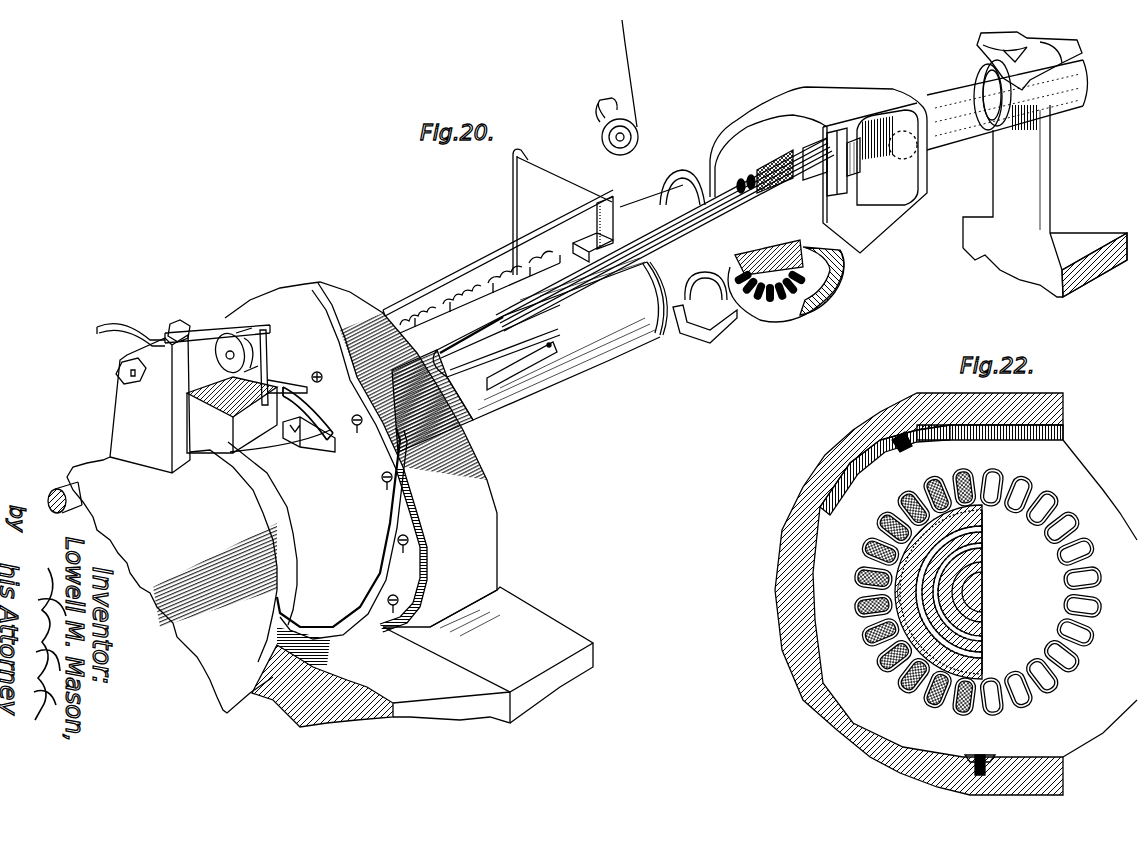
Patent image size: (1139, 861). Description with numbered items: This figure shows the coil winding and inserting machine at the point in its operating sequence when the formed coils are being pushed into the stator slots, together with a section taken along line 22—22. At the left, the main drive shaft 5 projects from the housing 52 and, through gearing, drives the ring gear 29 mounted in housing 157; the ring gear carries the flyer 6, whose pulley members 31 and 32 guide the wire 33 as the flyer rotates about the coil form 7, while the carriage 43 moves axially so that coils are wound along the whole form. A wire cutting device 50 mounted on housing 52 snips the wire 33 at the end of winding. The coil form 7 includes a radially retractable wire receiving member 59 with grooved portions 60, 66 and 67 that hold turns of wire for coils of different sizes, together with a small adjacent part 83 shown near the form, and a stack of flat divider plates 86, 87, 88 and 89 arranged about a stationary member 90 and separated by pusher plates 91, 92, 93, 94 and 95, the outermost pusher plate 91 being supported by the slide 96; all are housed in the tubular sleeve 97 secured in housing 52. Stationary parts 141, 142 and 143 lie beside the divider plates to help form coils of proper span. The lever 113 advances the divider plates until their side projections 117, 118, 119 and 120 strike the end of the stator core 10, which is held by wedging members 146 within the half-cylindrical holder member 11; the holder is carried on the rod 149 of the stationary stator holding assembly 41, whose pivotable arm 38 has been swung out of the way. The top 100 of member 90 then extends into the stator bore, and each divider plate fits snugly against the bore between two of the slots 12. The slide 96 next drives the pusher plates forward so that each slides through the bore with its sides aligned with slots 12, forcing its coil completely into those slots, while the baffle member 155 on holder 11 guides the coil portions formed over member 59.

In FIG. 20, the main drive shaft 5 is at (64, 492).
In FIG. 20, the flyer 6 is at (287, 378).
In FIG. 20, the coil form 7 is at (609, 386).
In FIG. 20, the stator core 10 is at (832, 325).
In FIG. 22, the stator core 10 is at (1090, 480).
In FIG. 20, the stator holder member 11 is at (802, 73).
In FIG. 20, the stator slots 12 is at (787, 253).
In FIG. 22, the stator slots 12 is at (1040, 677).
In FIG. 20, the section line 22— 22 is at (720, 137).
In FIG. 20, the ring gear 29 is at (328, 407).
In FIG. 20, the flyer pulley 31 is at (229, 342).
In FIG. 20, the flyer pulley 32 is at (213, 337).
In FIG. 20, the wire 33 is at (500, 240).
In FIG. 20, the arm 38 is at (596, 108).
In FIG. 20, the stator holding assembly 41 is at (1092, 148).
In FIG. 20, the carriage 43 is at (530, 615).
In FIG. 20, the wire cutting device 50 is at (205, 338).
In FIG. 20, the housing 52 is at (215, 675).
In FIG. 20, the wire receiving member 59 is at (466, 278).
In FIG. 20, the grooved portion 60 is at (538, 256).
In FIG. 20, the grooved portion 66 is at (482, 277).
In FIG. 20, the grooved portion 67 is at (420, 305).
In FIG. 20, the plate 83 is at (590, 240).
In FIG. 20, the divider plate 86 is at (740, 208).
In FIG. 22, the divider plate 86 is at (973, 622).
In FIG. 20, the divider plate 87 is at (716, 213).
In FIG. 22, the divider plate 87 is at (960, 583).
In FIG. 20, the divider plate 88 is at (700, 215).
In FIG. 22, the divider plate 88 is at (930, 560).
In FIG. 20, the divider plate 89 is at (676, 224).
In FIG. 22, the divider plate 89 is at (907, 557).
In FIG. 20, the stationary member 90 is at (660, 228).
In FIG. 20, the pusher plate 91 is at (670, 296).
In FIG. 22, the pusher plate 91 is at (980, 652).
In FIG. 20, the pusher plate 92 is at (775, 170).
In FIG. 22, the pusher plate 92 is at (968, 602).
In FIG. 20, the pusher plate 93 is at (815, 148).
In FIG. 22, the pusher plate 93 is at (940, 570).
In FIG. 20, the pusher plate 94 is at (835, 132).
In FIG. 22, the pusher plate 94 is at (980, 632).
In FIG. 22, the pusher plate 95 is at (890, 567).
In FIG. 20, the slide member 96 is at (500, 415).
In FIG. 20, the tubular sleeve 97 is at (638, 127).
In FIG. 20, the top portion of stationary member 100 is at (855, 165).
In FIG. 22, the top portion of stationary member 100 is at (900, 593).
In FIG. 20, the lever 113 is at (517, 370).
In FIG. 22, the projection 117 is at (963, 680).
In FIG. 22, the projection 118 is at (943, 683).
In FIG. 22, the projection 119 is at (917, 663).
In FIG. 22, the projection 120 is at (907, 637).
In FIG. 20, the stationary part 141 is at (320, 435).
In FIG. 20, the stationary part 142 is at (455, 372).
In FIG. 20, the stationary part 143 is at (473, 340).
In FIG. 20, the wedging member 146 is at (668, 200).
In FIG. 22, the wedging member 146 is at (900, 440).
In FIG. 20, the rod 149 is at (955, 132).
In FIG. 20, the baffle member 155 is at (553, 173).
In FIG. 20, the housing 157 is at (475, 525).